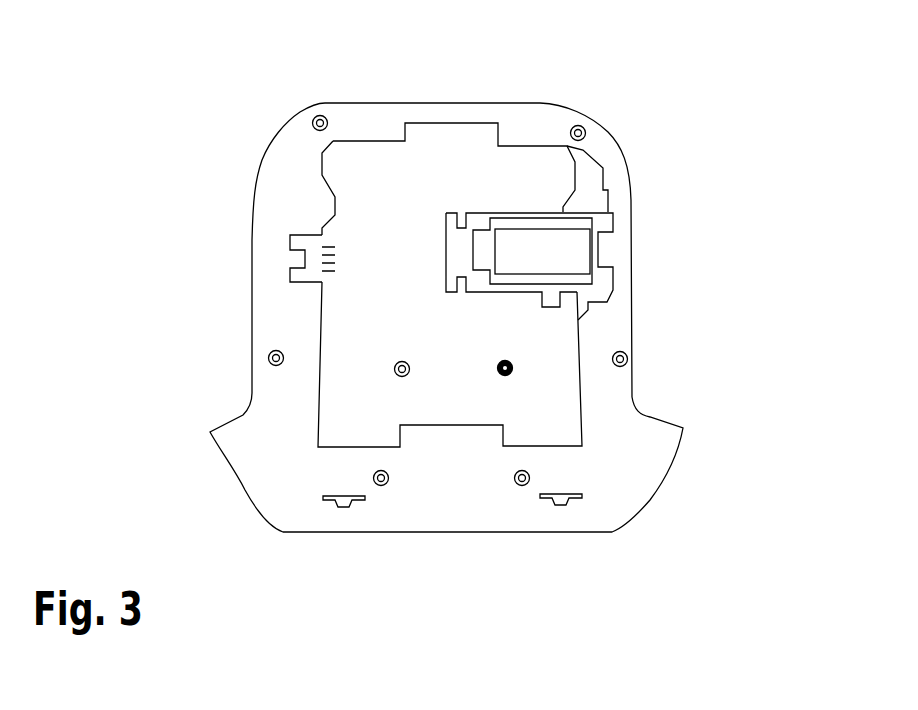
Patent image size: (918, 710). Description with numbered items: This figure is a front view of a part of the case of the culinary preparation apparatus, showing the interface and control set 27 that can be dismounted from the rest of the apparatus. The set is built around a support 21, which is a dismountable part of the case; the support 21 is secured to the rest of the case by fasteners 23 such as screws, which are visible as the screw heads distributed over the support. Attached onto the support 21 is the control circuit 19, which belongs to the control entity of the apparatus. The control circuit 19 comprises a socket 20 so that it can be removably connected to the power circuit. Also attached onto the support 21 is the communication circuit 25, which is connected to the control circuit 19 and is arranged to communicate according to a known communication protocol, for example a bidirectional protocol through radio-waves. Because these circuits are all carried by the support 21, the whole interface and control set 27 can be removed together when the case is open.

The control circuit 19 is at (465, 155).
The socket 20 is at (335, 253).
The support 21 is at (385, 125).
The fasteners 23 is at (630, 358).
The communication circuit 25 is at (585, 246).
The interface and control set 27 is at (678, 499).